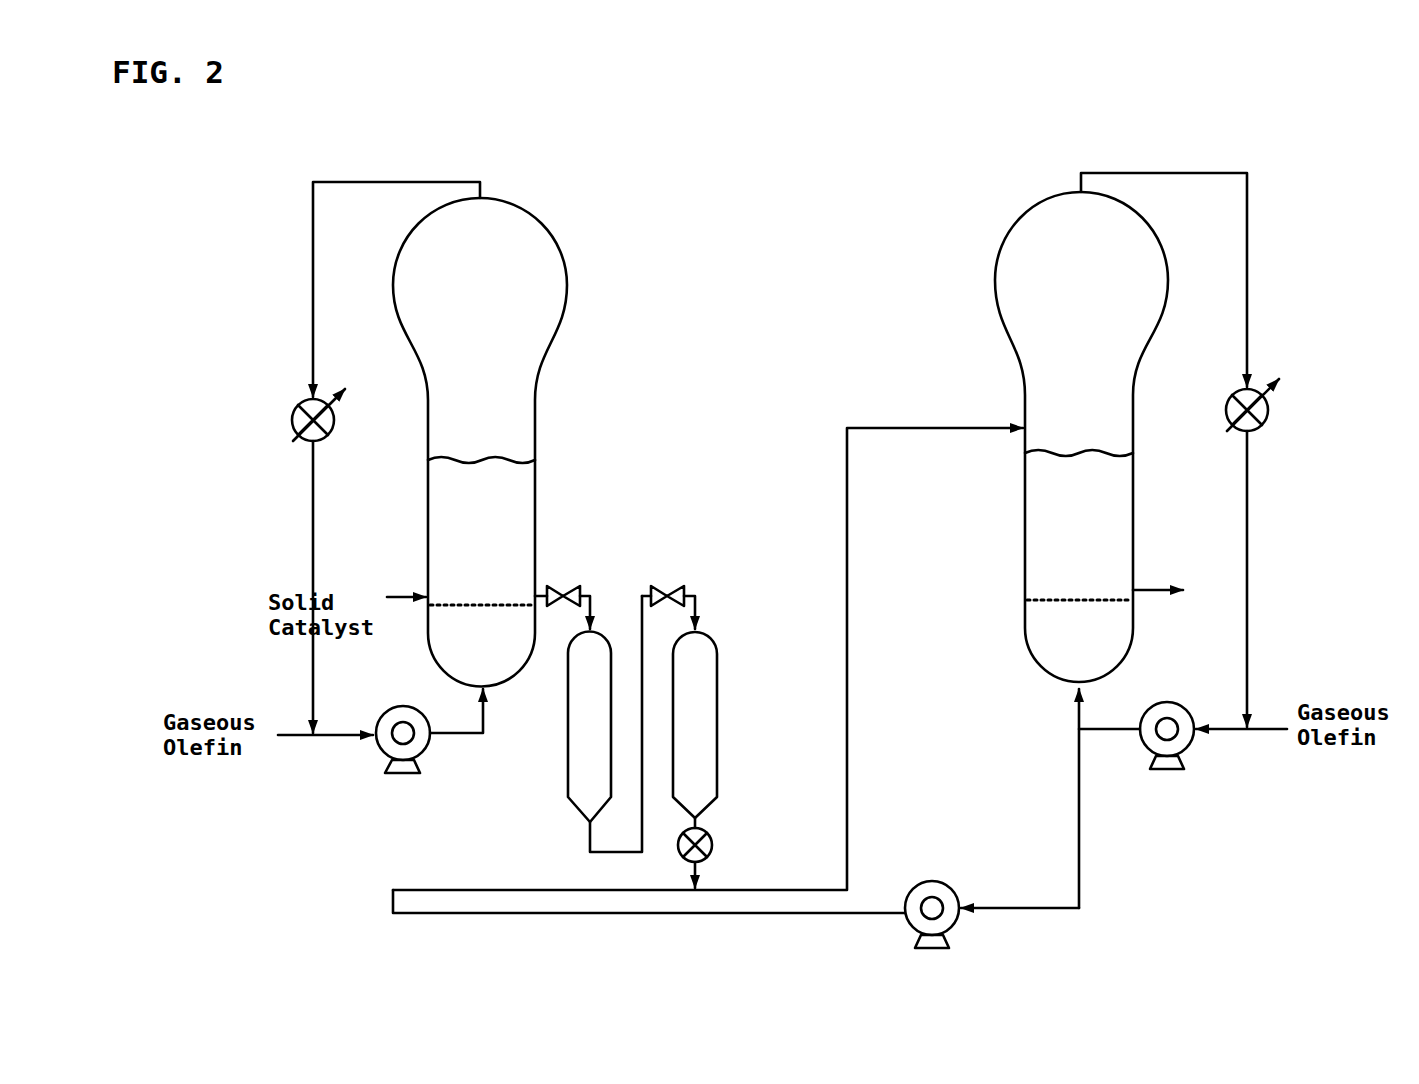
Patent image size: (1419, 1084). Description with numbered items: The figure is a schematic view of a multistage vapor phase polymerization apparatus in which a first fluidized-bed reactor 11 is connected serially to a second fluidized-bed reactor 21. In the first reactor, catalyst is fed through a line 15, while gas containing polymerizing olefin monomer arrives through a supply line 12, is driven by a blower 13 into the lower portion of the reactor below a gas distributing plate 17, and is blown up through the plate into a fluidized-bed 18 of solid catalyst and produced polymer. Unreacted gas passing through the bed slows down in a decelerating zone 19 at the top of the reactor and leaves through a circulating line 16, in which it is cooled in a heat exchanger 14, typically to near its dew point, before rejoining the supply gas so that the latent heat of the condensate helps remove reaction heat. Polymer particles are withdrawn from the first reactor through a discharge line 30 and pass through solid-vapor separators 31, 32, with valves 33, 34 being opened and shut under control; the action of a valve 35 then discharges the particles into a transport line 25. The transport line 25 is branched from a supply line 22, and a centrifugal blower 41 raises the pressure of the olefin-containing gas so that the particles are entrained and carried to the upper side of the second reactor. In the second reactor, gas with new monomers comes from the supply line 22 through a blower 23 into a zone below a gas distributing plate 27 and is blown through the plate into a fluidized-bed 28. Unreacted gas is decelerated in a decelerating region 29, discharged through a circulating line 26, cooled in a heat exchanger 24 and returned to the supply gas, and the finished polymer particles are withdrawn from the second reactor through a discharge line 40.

The first fluidized-bed reactor 11 is at (566, 225).
The supply line 12 is at (337, 740).
The blower 13 is at (400, 777).
The heat exchanger 14 is at (291, 421).
The line 15 is at (395, 585).
The circulating line 16 is at (318, 541).
The gas distributing plate 17 is at (455, 606).
The fluidized-bed 18 is at (513, 515).
The decelerating zone 19 is at (533, 313).
The second fluidized-bed reactor 21 is at (997, 222).
The supply line 22 is at (1225, 730).
The blower 23 is at (1165, 772).
The heat exchanger 24 is at (1270, 405).
The transport line 25 is at (850, 642).
The circulating line 26 is at (1248, 562).
The gas distributing plate 27 is at (1040, 597).
The fluidized-bed 28 is at (1052, 498).
The decelerating region 29 is at (1020, 307).
The discharge line 30 is at (732, 500).
The solid-vapor separator 31 is at (567, 760).
The solid-vapor separator 32 is at (717, 770).
The valve 33 is at (570, 585).
The valve 34 is at (675, 585).
The valve 35 is at (713, 840).
The discharge line 40 is at (1145, 592).
The centrifugal blower 41 is at (928, 880).